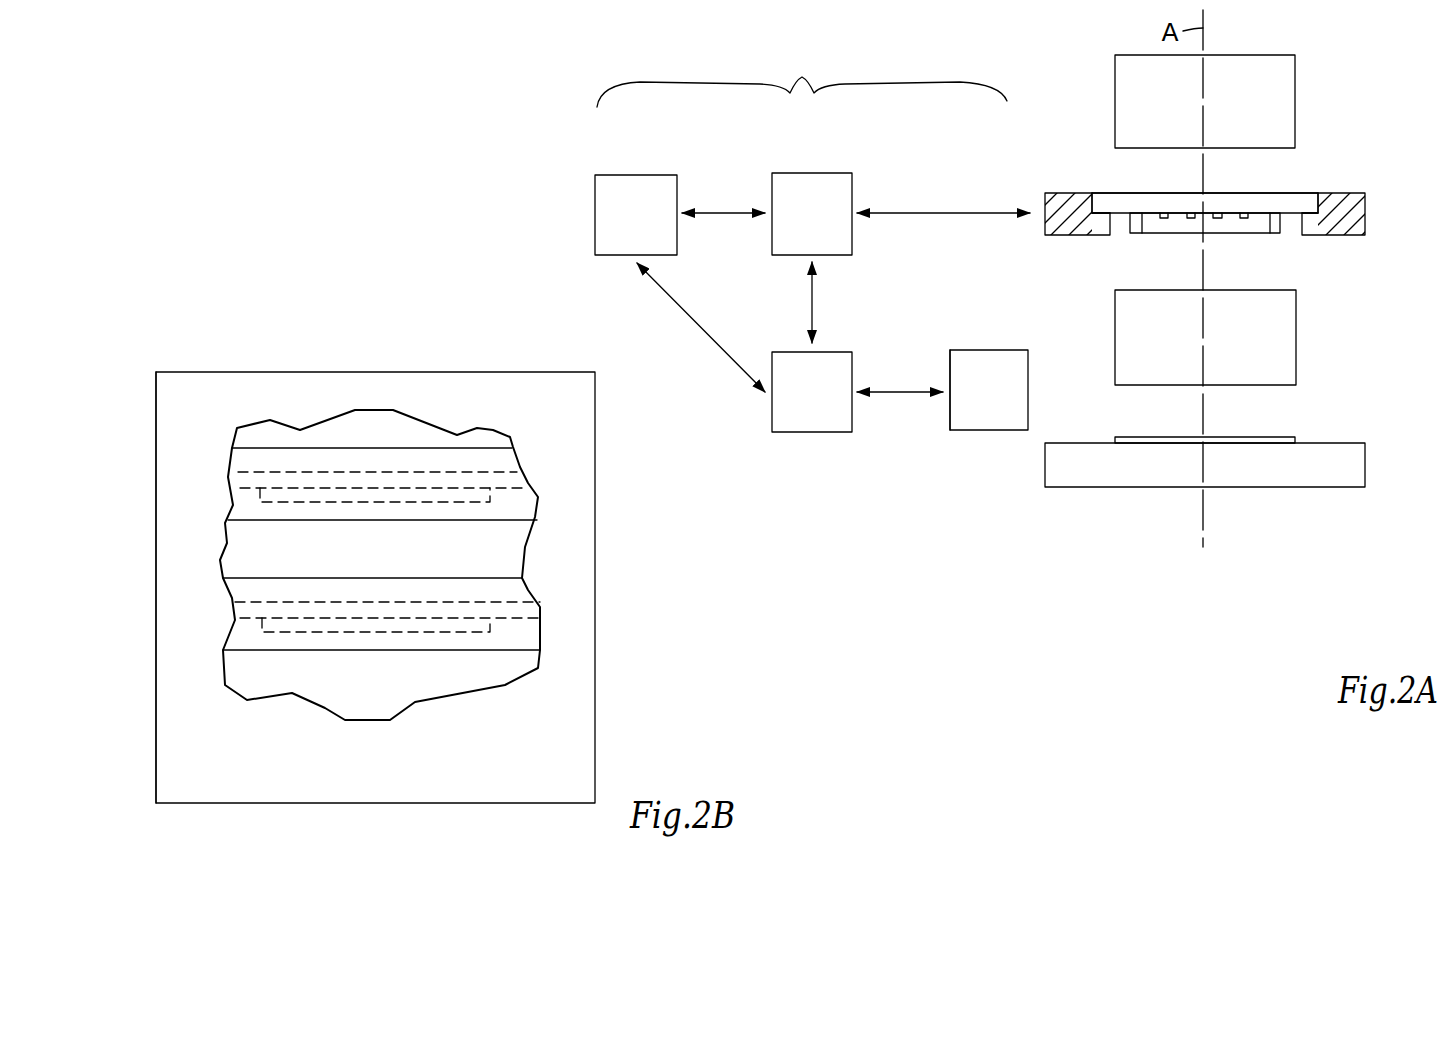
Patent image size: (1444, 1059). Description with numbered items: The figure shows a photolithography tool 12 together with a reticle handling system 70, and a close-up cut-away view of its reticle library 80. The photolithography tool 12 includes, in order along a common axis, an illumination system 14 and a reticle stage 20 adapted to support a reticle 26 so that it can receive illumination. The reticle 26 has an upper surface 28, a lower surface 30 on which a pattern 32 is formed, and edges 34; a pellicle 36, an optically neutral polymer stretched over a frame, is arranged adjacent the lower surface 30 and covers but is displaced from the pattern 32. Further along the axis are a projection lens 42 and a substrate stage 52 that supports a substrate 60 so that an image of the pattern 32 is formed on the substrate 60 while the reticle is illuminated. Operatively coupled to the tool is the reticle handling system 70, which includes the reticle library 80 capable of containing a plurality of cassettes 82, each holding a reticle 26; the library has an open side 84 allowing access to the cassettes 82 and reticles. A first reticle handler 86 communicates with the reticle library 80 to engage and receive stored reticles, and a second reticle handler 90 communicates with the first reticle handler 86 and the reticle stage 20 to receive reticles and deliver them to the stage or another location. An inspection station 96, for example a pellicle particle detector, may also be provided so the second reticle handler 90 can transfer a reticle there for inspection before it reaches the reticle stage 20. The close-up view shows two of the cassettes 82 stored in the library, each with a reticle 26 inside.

In FIG. 2A, the photolithography tool 12 is at (1113, 55).
In FIG. 2A, the illumination system 14 is at (1280, 55).
In FIG. 2A, the reticle stage 20 is at (1355, 193).
In FIG. 2A, the reticle 26 is at (1100, 196).
In FIG. 2B, the reticle 26 is at (487, 476).
In FIG. 2A, the upper surface 28 is at (1108, 192).
In FIG. 2A, the lower surface 30 is at (1118, 230).
In FIG. 2A, the pattern 32 is at (1163, 219).
In FIG. 2A, the edges 34 is at (1330, 207).
In FIG. 2A, the pellicle 36 is at (1272, 233).
In FIG. 2B, the pellicle 36 is at (330, 503).
In FIG. 2A, the projection lens 42 is at (1280, 290).
In FIG. 2A, the substrate stage 52 is at (1350, 443).
In FIG. 2A, the substrate 60 is at (1280, 437).
In FIG. 2A, the reticle handling system 70 is at (802, 76).
In FIG. 2A, the reticle library 80 is at (985, 430).
In FIG. 2B, the reticle library 80 is at (484, 371).
In FIG. 2B, the cassettes 82 is at (488, 578).
In FIG. 2A, the open side 84 is at (950, 356).
In FIG. 2B, the open side 84 is at (156, 460).
In FIG. 2A, the first reticle handler 86 is at (808, 432).
In FIG. 2A, the second reticle handler 90 is at (808, 173).
In FIG. 2A, the inspection station 96 is at (632, 175).